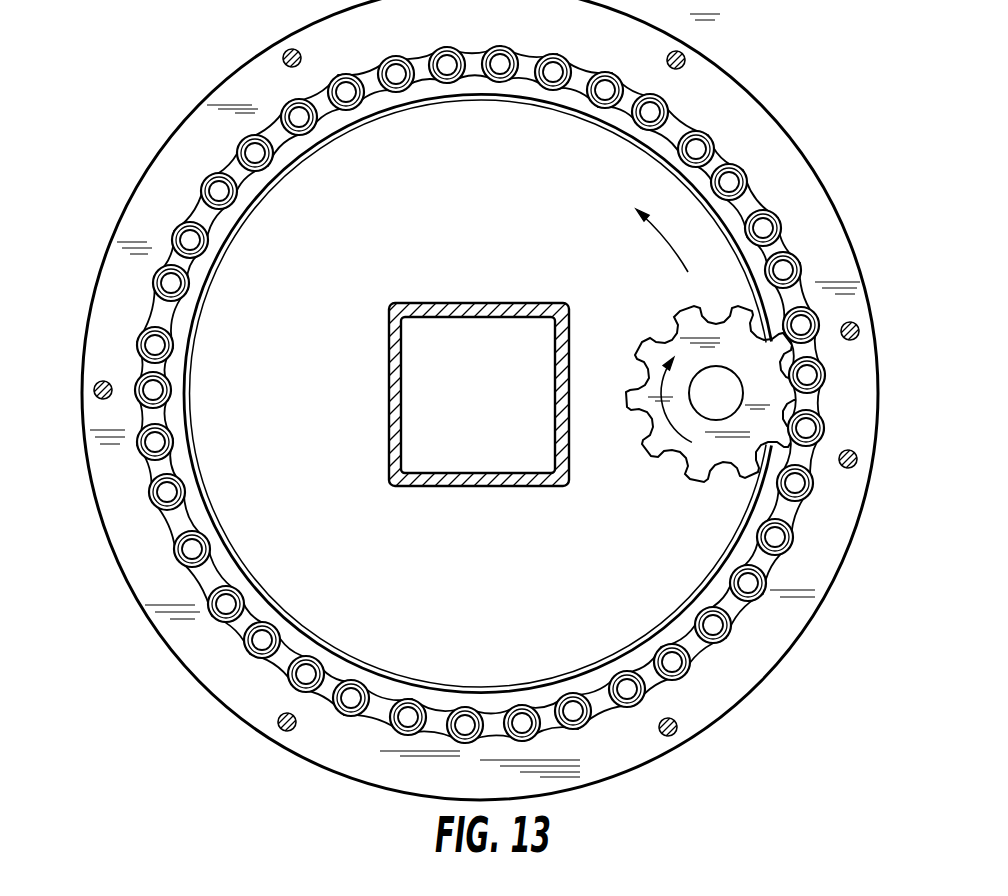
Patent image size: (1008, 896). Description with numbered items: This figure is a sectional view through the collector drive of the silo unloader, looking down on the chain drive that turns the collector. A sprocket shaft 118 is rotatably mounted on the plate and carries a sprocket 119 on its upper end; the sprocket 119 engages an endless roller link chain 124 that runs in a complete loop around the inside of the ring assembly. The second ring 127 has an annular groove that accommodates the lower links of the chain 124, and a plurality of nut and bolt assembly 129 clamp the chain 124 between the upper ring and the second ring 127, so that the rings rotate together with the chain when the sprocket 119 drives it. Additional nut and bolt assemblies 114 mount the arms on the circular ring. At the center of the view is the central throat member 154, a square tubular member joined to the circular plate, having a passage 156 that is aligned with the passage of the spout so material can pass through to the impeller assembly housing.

The nut and bolt assemblies 114 is at (852, 450).
The sprocket shaft 118 is at (712, 380).
The sprocket 119 is at (690, 482).
The endless roller link chain 124 is at (738, 612).
The second ring 127 is at (106, 503).
The nut and bolt assembly 129 is at (288, 52).
The central throat member 154 is at (513, 311).
The passage 156 is at (478, 395).